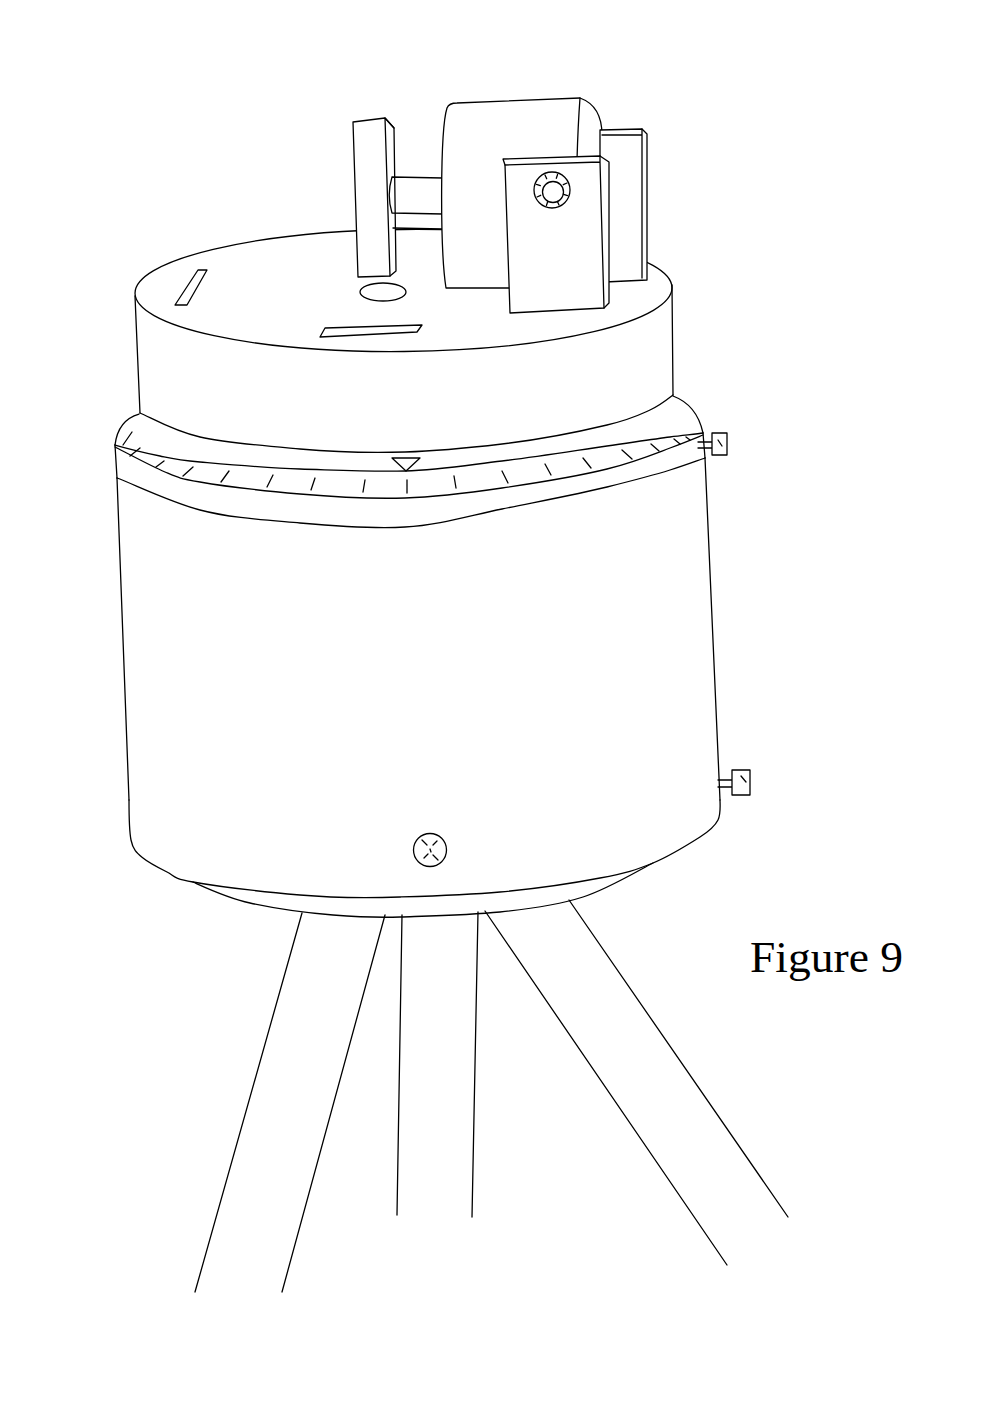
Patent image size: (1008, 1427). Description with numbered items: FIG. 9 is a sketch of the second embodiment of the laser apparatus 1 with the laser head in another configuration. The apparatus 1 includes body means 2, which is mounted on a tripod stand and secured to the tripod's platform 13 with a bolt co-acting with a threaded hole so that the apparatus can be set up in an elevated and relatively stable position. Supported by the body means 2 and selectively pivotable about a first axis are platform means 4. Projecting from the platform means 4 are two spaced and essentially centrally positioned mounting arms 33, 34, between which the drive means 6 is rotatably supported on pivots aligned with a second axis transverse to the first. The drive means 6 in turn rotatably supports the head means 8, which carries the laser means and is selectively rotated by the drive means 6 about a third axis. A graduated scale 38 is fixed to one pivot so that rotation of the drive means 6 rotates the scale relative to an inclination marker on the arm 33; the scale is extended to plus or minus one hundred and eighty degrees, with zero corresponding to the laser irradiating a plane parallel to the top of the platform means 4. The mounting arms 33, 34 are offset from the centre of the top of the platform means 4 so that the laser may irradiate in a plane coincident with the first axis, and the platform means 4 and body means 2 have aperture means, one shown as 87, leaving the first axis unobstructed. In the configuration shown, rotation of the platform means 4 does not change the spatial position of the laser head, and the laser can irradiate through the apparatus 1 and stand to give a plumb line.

The apparatus 1 is at (150, 725).
The body means 2 is at (720, 680).
The platform means 4 is at (655, 360).
The drive means 6 is at (487, 128).
The head means 8 is at (362, 148).
The platform 13 is at (243, 903).
The mounting arm 33 is at (585, 252).
The mounting arm 34 is at (633, 192).
The graduated scale 38 is at (567, 173).
The aperture means 87 is at (360, 291).